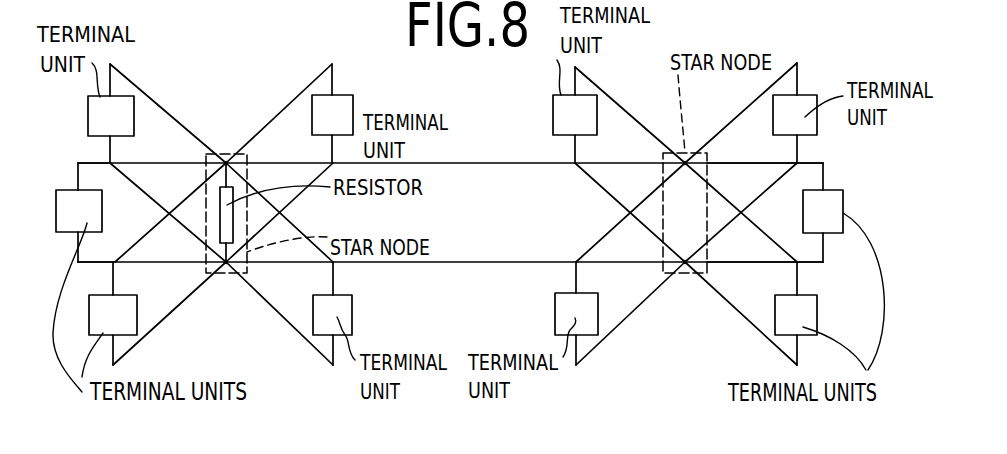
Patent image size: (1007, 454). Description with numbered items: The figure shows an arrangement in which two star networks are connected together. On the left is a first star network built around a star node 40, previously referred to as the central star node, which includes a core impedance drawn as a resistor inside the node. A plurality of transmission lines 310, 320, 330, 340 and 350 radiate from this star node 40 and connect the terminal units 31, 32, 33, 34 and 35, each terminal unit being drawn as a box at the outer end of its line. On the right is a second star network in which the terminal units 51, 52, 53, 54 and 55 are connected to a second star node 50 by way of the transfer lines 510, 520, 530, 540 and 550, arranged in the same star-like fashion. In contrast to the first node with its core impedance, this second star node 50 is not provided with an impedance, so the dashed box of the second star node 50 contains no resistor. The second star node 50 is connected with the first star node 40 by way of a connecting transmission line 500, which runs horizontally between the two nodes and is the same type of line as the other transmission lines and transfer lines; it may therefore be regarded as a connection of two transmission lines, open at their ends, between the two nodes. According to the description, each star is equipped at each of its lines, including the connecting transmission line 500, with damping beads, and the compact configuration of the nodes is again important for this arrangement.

The terminal unit 31 is at (100, 117).
The terminal unit 32 is at (345, 117).
The terminal unit 33 is at (342, 315).
The terminal unit 34 is at (103, 318).
The terminal unit 35 is at (87, 223).
The star node 40 is at (227, 275).
The second star node 50 is at (687, 274).
The terminal unit 51 is at (566, 124).
The terminal unit 52 is at (803, 107).
The terminal unit 53 is at (835, 207).
The terminal unit 54 is at (810, 320).
The terminal unit 55 is at (562, 316).
The transmission line 310 is at (162, 128).
The transmission line 320 is at (277, 132).
The transmission line 330 is at (282, 305).
The transmission line 340 is at (175, 300).
The transmission line 350 is at (97, 175).
The connecting transmission line 500 is at (503, 165).
The transfer line 510 is at (618, 120).
The transfer line 520 is at (745, 125).
The transfer line 530 is at (803, 178).
The transfer line 540 is at (747, 298).
The transfer line 550 is at (633, 298).